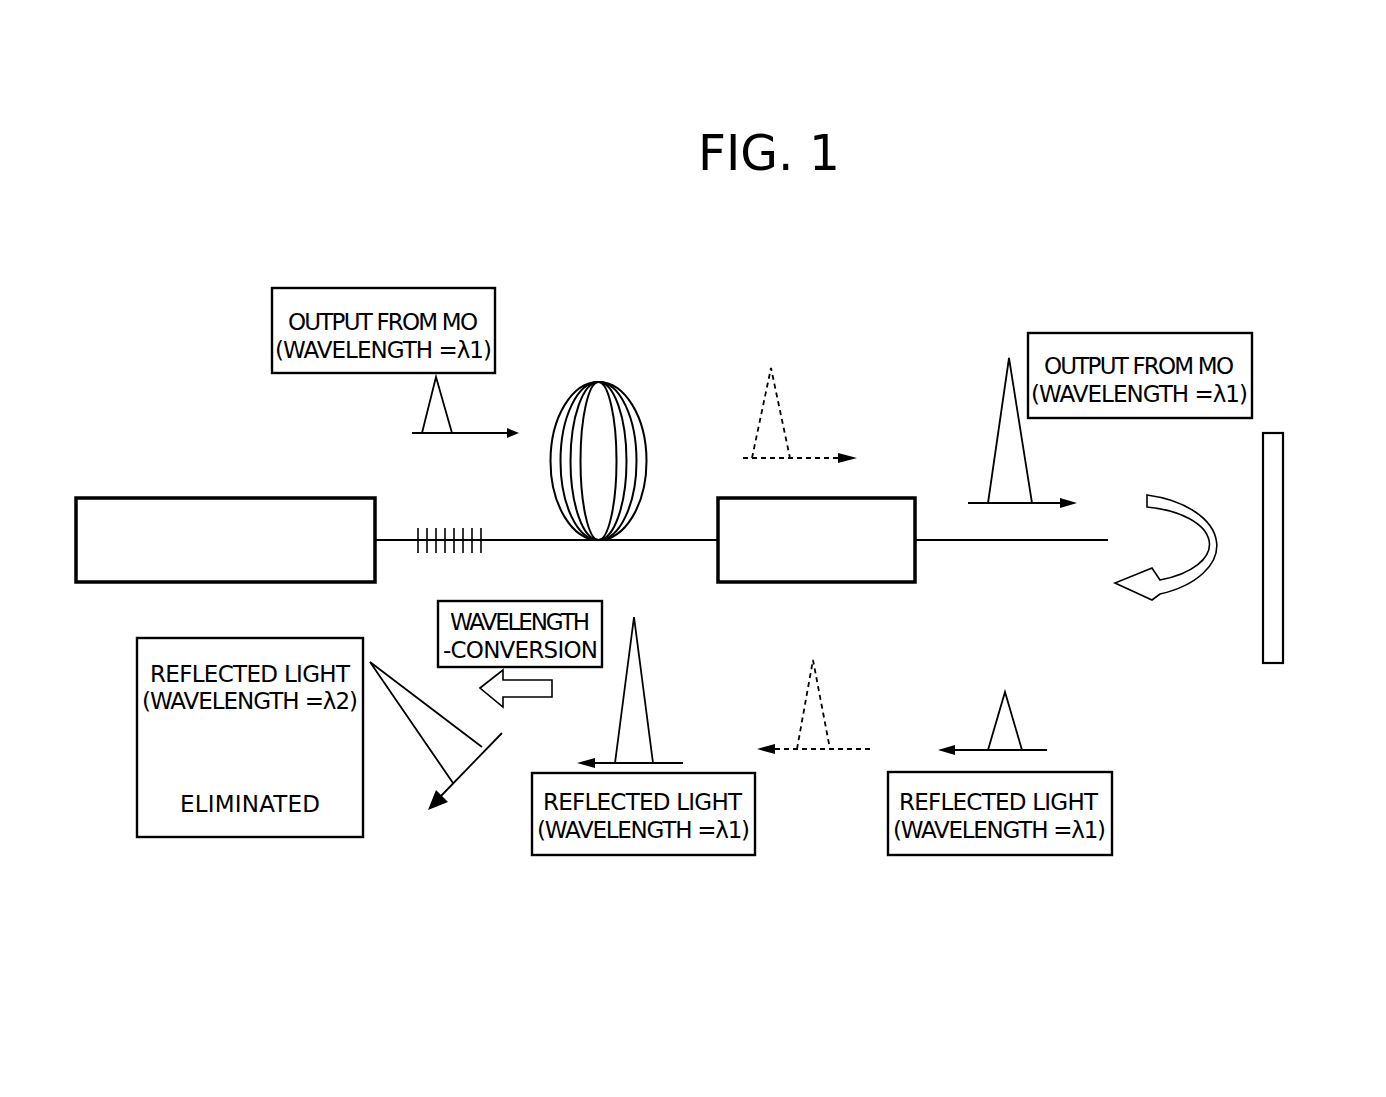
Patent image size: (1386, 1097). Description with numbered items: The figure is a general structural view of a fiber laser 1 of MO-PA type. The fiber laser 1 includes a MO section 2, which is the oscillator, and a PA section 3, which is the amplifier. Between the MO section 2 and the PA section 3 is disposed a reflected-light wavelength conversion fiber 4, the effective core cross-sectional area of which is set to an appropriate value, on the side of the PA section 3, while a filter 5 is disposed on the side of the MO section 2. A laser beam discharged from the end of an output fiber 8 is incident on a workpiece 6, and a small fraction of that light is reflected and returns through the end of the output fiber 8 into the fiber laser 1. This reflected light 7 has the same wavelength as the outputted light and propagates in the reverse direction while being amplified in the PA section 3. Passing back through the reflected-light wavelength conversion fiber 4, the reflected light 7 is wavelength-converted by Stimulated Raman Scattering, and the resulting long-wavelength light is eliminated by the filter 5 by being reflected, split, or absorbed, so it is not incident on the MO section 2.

The fiber laser 1 is at (835, 405).
The MO section 2 is at (240, 498).
The PA section 3 is at (885, 583).
The reflected-light wavelength conversion fiber 4 is at (598, 383).
The filter 5 is at (443, 527).
The workpiece 6 is at (1283, 520).
The reflected light 7 is at (1193, 588).
The output fiber 8 is at (1085, 542).